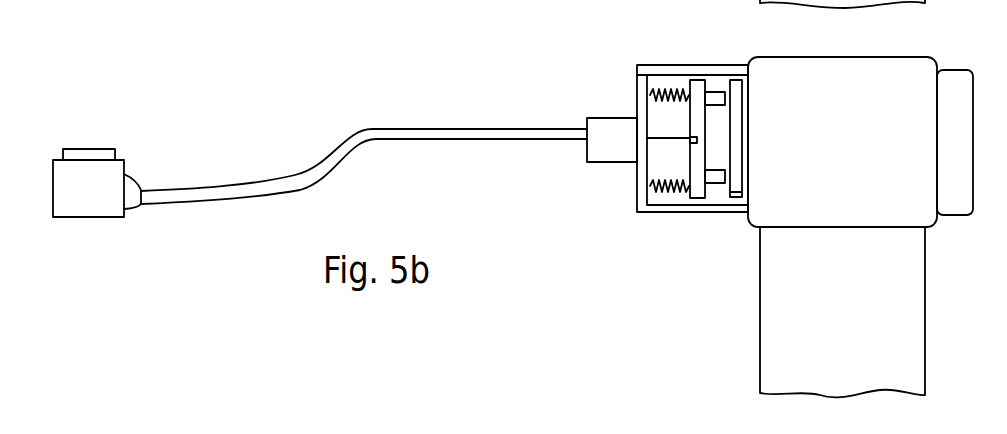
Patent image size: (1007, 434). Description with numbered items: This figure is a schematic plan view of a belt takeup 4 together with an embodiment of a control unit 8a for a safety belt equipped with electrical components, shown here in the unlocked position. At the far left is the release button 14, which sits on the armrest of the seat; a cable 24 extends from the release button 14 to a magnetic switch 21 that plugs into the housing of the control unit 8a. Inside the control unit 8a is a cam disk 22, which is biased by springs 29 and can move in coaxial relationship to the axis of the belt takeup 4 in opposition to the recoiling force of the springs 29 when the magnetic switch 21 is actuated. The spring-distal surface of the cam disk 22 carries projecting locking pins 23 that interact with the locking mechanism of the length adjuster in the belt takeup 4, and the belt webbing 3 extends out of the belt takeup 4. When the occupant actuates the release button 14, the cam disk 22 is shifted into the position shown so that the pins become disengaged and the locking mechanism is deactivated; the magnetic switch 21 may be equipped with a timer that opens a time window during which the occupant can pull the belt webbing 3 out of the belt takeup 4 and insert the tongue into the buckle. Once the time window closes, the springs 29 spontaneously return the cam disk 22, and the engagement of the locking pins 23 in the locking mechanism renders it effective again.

The release button 14 is at (82, 143).
The cable 24 is at (368, 122).
The magnetic switch 21 is at (617, 123).
The control unit 8a is at (680, 210).
The springs 29 is at (667, 93).
The cam disk 22 is at (699, 83).
The locking pins 23 is at (718, 184).
The belt takeup 4 is at (918, 204).
The belt webbing 3 is at (782, 333).